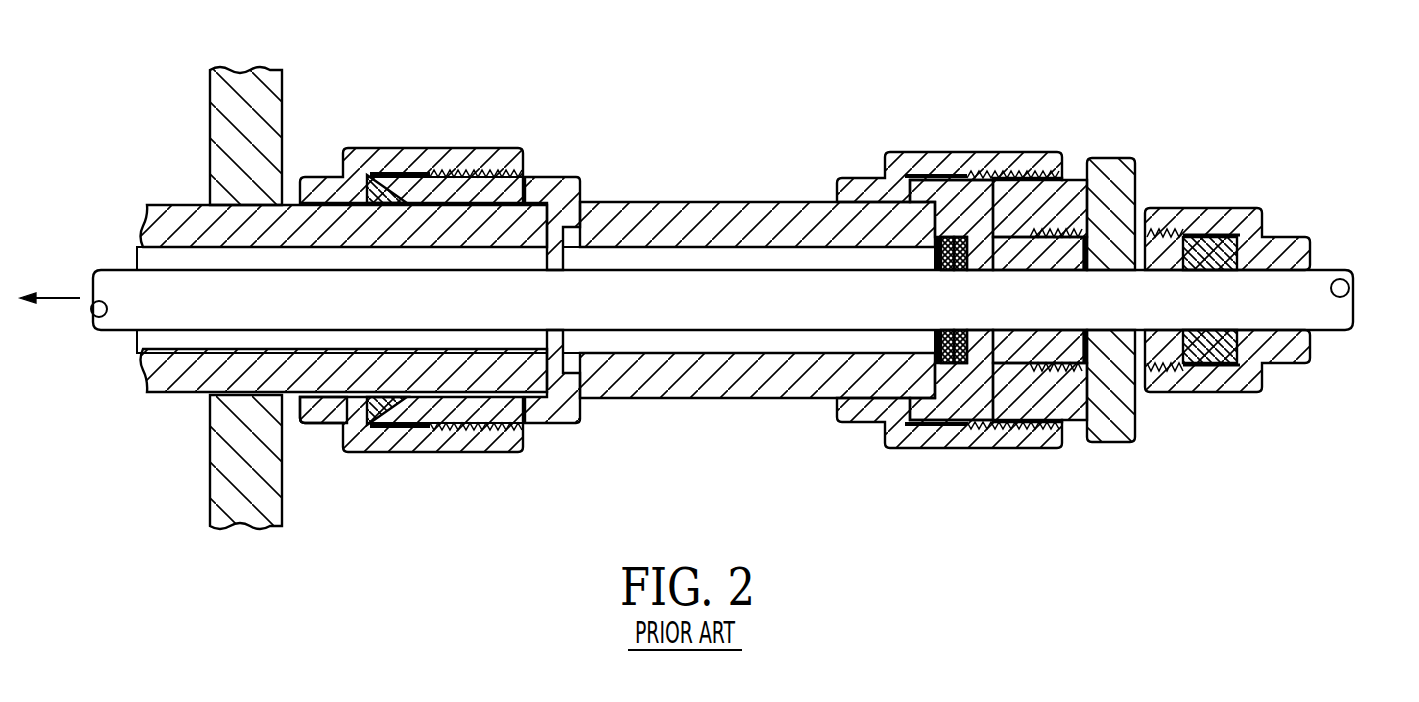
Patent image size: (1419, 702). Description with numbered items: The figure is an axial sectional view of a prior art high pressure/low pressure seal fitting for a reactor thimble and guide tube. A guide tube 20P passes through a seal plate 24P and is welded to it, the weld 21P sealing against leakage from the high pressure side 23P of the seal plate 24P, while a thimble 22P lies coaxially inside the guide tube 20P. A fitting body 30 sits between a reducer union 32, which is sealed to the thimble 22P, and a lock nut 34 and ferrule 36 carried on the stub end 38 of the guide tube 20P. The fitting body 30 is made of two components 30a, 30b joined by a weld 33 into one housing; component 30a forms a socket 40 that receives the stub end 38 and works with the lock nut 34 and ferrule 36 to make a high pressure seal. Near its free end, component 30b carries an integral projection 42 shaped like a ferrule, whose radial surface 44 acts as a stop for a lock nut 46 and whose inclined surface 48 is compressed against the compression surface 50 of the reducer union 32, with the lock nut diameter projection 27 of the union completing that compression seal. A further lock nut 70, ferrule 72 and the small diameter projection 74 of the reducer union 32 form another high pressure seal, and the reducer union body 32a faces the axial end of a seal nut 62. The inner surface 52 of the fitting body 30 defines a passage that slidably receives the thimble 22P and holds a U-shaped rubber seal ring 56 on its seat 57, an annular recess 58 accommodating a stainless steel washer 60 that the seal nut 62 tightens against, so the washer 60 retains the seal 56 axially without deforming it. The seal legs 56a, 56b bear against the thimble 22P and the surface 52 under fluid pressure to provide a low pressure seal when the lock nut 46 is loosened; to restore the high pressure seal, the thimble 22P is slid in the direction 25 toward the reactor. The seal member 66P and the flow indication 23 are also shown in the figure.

The guide tube 20P is at (333, 301).
The weld 21P is at (288, 397).
The thimble 22P is at (130, 318).
The high pressure side 23P is at (215, 122).
The seal plate 24P is at (225, 269).
The stub end of the guide tube 38 is at (185, 210).
The direction toward the reactor 25 is at (60, 298).
The cable path direction 23 is at (572, 340).
The lock nut 34 is at (428, 285).
The ferrule 36 is at (395, 422).
The socket 40 is at (543, 410).
The fitting body 30 is at (730, 280).
The fitting body component 30a is at (572, 180).
The fitting body component 30b is at (792, 206).
The weld 33 is at (583, 402).
The inner surface 52 is at (740, 345).
The radial surface 44 is at (912, 415).
The lock nut 46 is at (963, 309).
The compression surface 50 is at (942, 196).
The integral projection 42 is at (943, 408).
The second annular recess 58 is at (990, 230).
The inclined surface 48 is at (975, 412).
The stainless steel washer 60 is at (1077, 188).
The seal nut 62 is at (1067, 352).
The lock nut diameter projection 27 is at (1037, 418).
The rubber seal ring 56 is at (943, 267).
The seal leg 56a is at (935, 262).
The seal leg 56b is at (957, 268).
The seat 57 is at (935, 358).
The seal ring 66P is at (943, 242).
The reducer union 32 is at (1110, 146).
The reducer union body 32a is at (1113, 433).
The lock nut 70 is at (1240, 331).
The ferrule 72 is at (1217, 265).
The small diameter projection 74 is at (1195, 387).